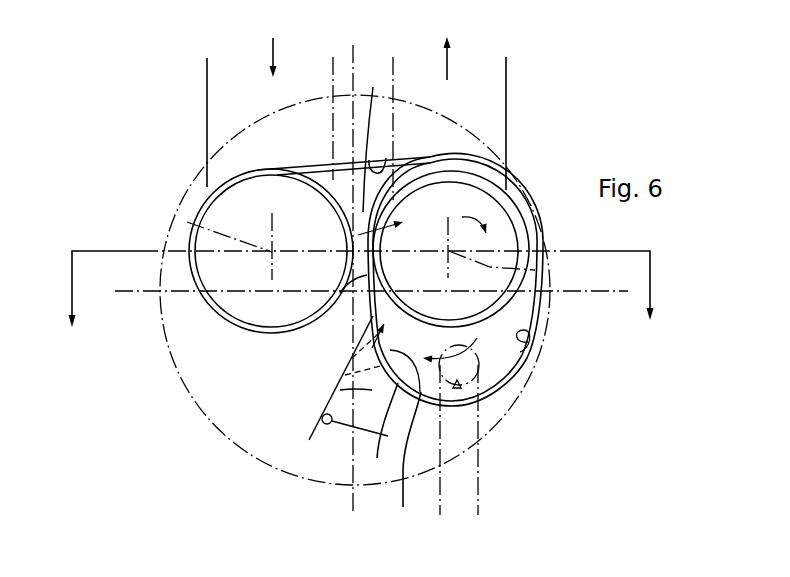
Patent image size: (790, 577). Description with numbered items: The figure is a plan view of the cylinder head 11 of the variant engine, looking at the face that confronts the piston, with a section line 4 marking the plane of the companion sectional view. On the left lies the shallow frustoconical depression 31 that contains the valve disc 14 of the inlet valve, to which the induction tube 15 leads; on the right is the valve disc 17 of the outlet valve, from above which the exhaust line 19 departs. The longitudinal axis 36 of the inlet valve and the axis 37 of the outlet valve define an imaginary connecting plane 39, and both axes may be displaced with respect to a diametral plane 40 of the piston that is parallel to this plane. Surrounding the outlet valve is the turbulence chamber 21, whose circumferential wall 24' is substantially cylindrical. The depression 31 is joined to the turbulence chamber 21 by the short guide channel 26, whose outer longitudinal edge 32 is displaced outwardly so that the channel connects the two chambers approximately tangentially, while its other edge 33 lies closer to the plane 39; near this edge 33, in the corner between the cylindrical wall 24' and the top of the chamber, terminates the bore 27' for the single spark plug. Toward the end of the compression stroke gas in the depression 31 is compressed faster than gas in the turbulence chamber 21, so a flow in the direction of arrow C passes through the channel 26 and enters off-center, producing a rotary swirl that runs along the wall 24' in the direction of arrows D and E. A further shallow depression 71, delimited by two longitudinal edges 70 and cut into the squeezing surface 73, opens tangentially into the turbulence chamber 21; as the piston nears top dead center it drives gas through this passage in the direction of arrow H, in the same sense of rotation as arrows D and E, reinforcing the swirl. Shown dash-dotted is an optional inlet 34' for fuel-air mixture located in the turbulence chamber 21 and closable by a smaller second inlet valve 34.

The section line 4- 4 is at (361, 307).
The cylinder head 11 is at (237, 400).
The valve disc 14 is at (242, 193).
The induction tube 15 is at (227, 98).
The valve disc 17 is at (470, 202).
The exhaust line 19 is at (492, 103).
The turbulence chamber 21 is at (532, 363).
The circumferential wall 24' is at (554, 342).
The guide channel 26 is at (371, 135).
The spark plug bore 27' is at (399, 439).
The depression 31 is at (207, 205).
The longitudinal edge 32 is at (386, 158).
The edge 33 is at (344, 357).
The second inlet valve 34 is at (503, 382).
The inlet for fuel-air mixture 34' is at (459, 450).
The longitudinal axis of the inlet valve 36 is at (187, 222).
The axis of the outlet valve 37 is at (548, 270).
The connecting plane 39 is at (302, 243).
The diametral plane of the piston 40 is at (287, 293).
The longitudinal edges 70 is at (322, 419).
The shallow depression 71 is at (340, 390).
The squeezing surface 73 is at (272, 442).
The flow arrow C is at (390, 221).
The flow arrow D is at (482, 236).
The flow arrow E is at (443, 345).
The flow arrow H is at (387, 333).